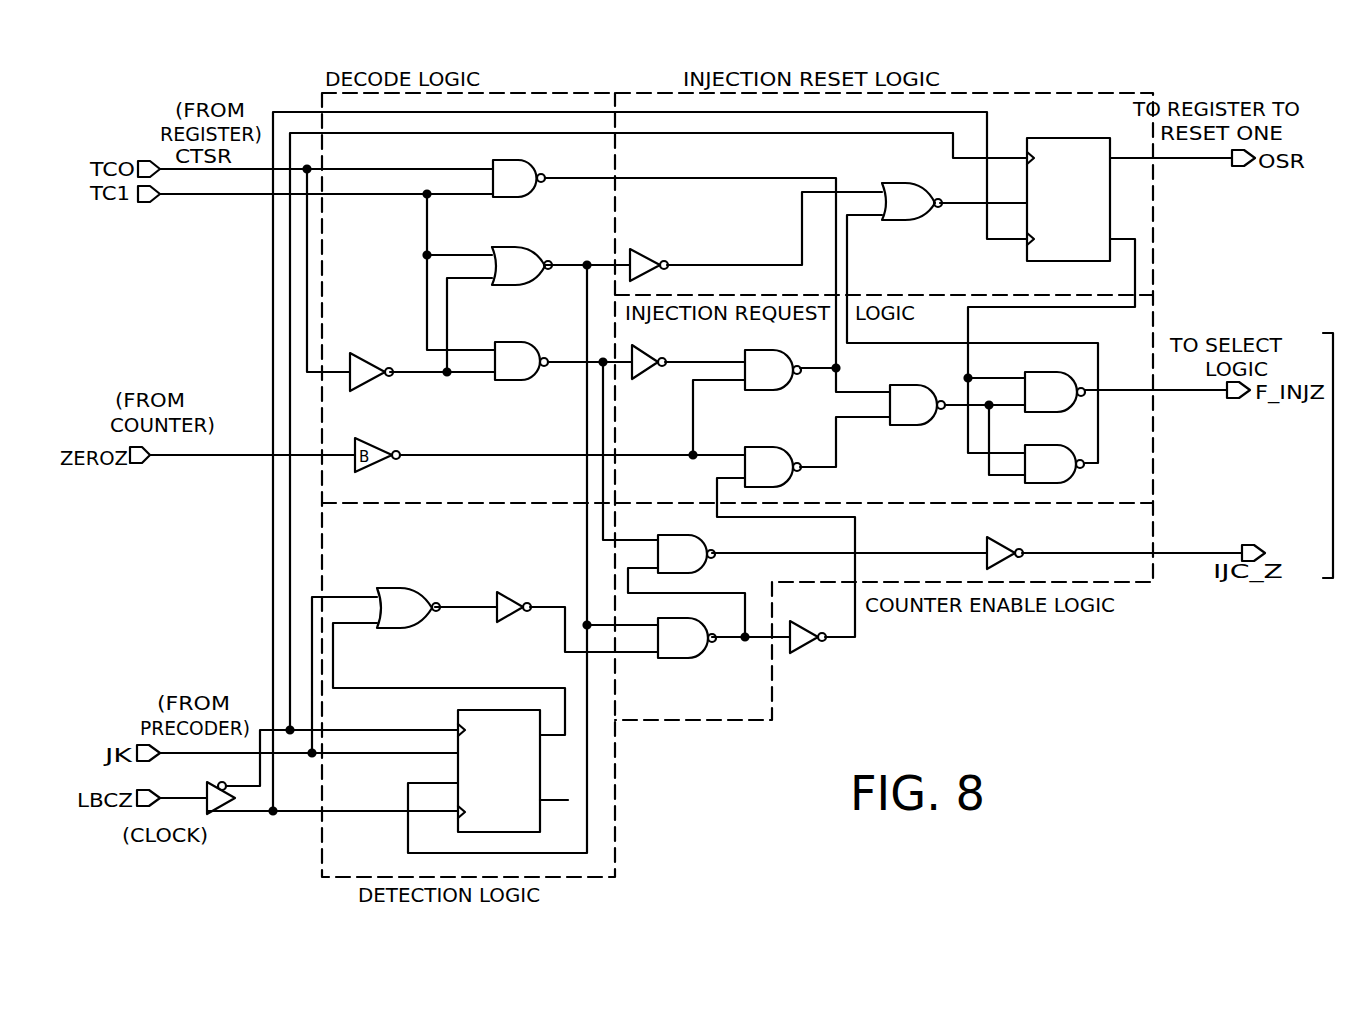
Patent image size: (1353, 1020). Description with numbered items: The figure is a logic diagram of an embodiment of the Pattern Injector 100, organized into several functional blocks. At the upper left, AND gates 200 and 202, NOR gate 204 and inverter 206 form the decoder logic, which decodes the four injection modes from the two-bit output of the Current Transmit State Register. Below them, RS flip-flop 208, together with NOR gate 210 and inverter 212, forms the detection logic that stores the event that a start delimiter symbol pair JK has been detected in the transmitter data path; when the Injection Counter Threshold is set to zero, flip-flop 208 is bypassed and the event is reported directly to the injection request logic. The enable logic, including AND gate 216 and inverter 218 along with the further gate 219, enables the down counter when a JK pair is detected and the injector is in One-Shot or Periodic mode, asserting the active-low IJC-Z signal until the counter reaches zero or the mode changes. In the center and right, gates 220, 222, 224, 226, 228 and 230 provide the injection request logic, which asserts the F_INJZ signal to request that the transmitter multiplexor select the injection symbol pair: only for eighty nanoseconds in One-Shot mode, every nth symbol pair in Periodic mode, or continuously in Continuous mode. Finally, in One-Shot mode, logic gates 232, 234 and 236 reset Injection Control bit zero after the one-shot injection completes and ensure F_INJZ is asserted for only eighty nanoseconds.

The Pattern Injector 100 is at (1105, 687).
The AND gate 200 is at (536, 178).
The AND gate 202 is at (512, 380).
The NOR gate 204 is at (520, 247).
The inverter 206 is at (357, 358).
The RS flip-flop 208 is at (530, 773).
The NOR gate 210 is at (402, 590).
The inverter 212 is at (506, 595).
The AND gate 216 is at (670, 540).
The inverter 218 is at (1003, 545).
The NAND gate 219 is at (680, 643).
The logic gate 220 is at (645, 367).
The logic gate 222 is at (775, 460).
The logic gate 224 is at (757, 376).
The logic gate 226 is at (905, 418).
The logic gate 228 is at (1034, 386).
The logic gate 230 is at (1062, 458).
The logic gate 232 is at (900, 213).
The logic gate 234 is at (1075, 138).
The logic gate 236 is at (805, 645).